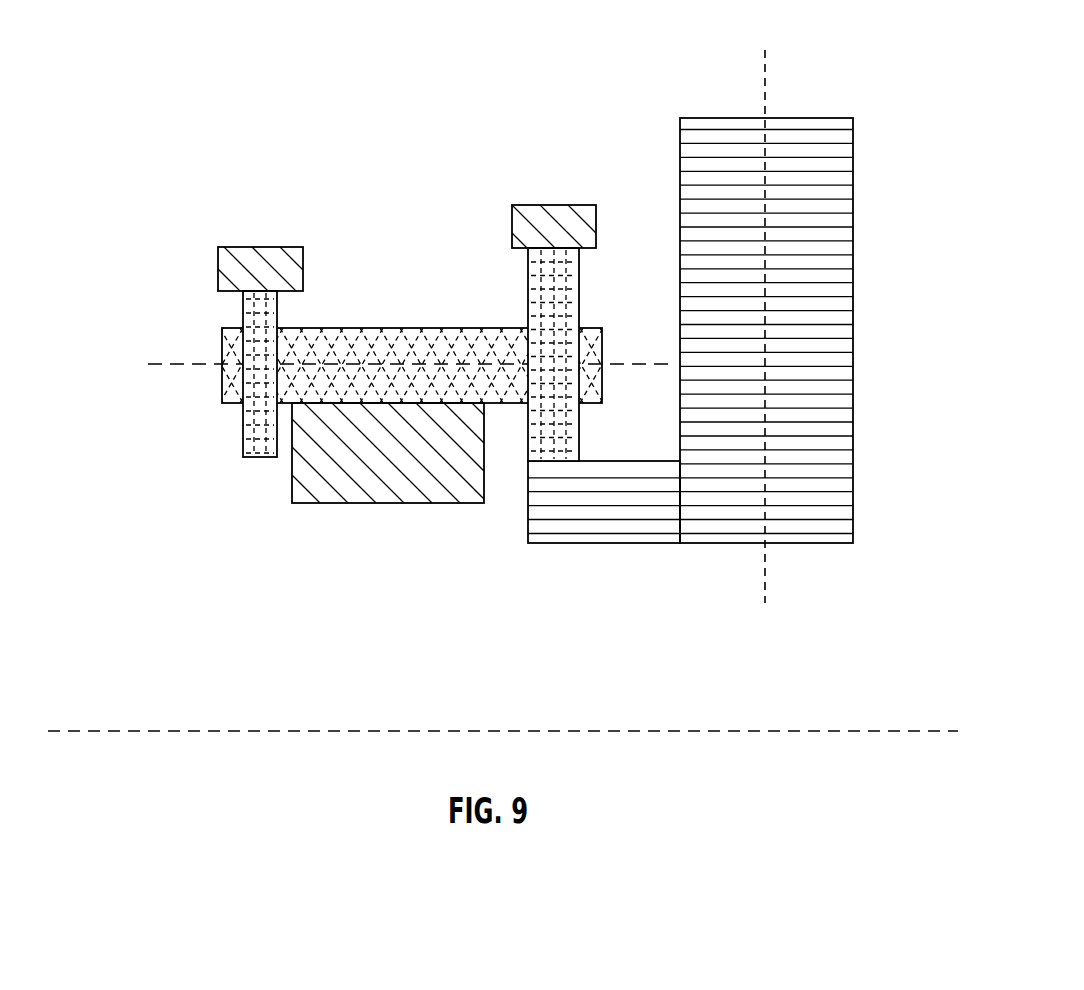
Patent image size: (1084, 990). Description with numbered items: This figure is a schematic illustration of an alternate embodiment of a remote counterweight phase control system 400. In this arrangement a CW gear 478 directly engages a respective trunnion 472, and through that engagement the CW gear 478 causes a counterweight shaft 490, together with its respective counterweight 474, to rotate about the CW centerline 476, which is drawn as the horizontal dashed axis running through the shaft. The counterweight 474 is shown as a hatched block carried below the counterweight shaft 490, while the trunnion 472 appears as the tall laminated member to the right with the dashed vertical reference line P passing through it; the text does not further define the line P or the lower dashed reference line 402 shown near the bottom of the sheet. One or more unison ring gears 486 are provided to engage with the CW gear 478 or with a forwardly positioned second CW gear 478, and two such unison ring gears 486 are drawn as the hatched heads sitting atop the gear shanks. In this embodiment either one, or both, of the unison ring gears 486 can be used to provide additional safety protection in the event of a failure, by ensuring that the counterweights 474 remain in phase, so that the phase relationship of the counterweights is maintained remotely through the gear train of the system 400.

The remote counterweight phase control system 400 is at (167, 46).
The ground / reference surface 402 is at (878, 730).
The trunnion 472 is at (840, 470).
The counterweight 474 is at (318, 490).
The CW centerline 476 is at (170, 364).
The CW gear 478 is at (258, 424).
The unison ring gear 486 is at (230, 276).
The counterweight shaft 490 is at (470, 328).
The plane P is at (766, 78).